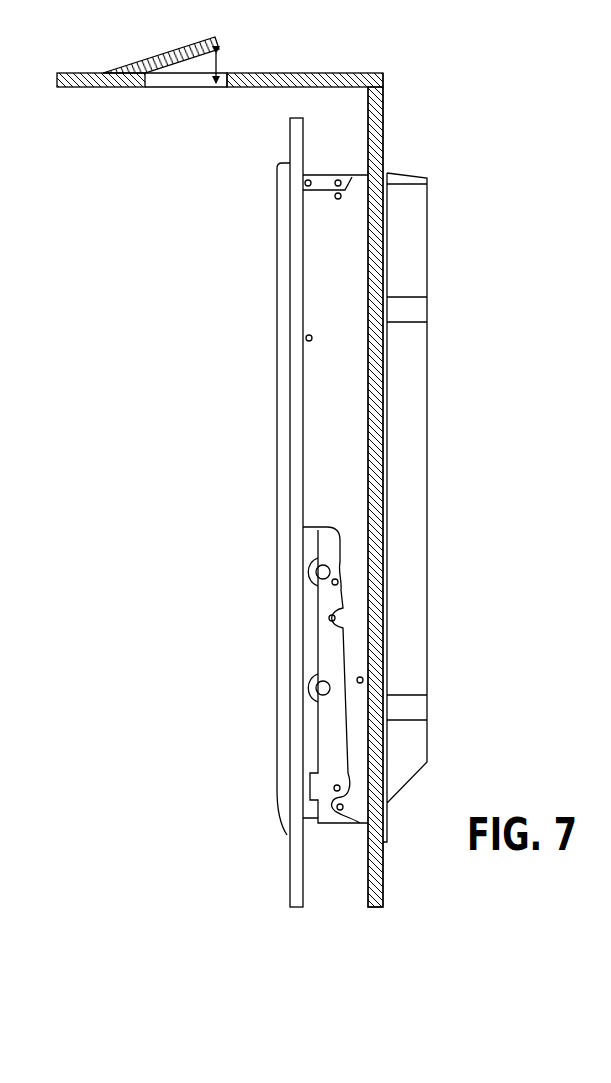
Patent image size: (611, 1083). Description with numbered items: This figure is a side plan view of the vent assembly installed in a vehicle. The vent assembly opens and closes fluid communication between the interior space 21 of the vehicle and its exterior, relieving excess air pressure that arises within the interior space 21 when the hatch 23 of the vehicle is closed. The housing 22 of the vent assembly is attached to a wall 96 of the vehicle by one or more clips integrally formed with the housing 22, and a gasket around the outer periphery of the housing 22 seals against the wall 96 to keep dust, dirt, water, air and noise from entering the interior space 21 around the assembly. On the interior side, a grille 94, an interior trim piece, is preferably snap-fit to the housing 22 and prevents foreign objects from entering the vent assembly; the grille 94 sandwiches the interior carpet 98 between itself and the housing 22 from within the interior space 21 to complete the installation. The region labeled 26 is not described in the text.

The interior space 21 is at (239, 137).
The housing 22 is at (428, 265).
The hatch 23 is at (135, 76).
The latch assembly 26 is at (351, 243).
The grille 94 is at (283, 330).
The wall 96 is at (383, 130).
The interior carpet 98 is at (289, 150).